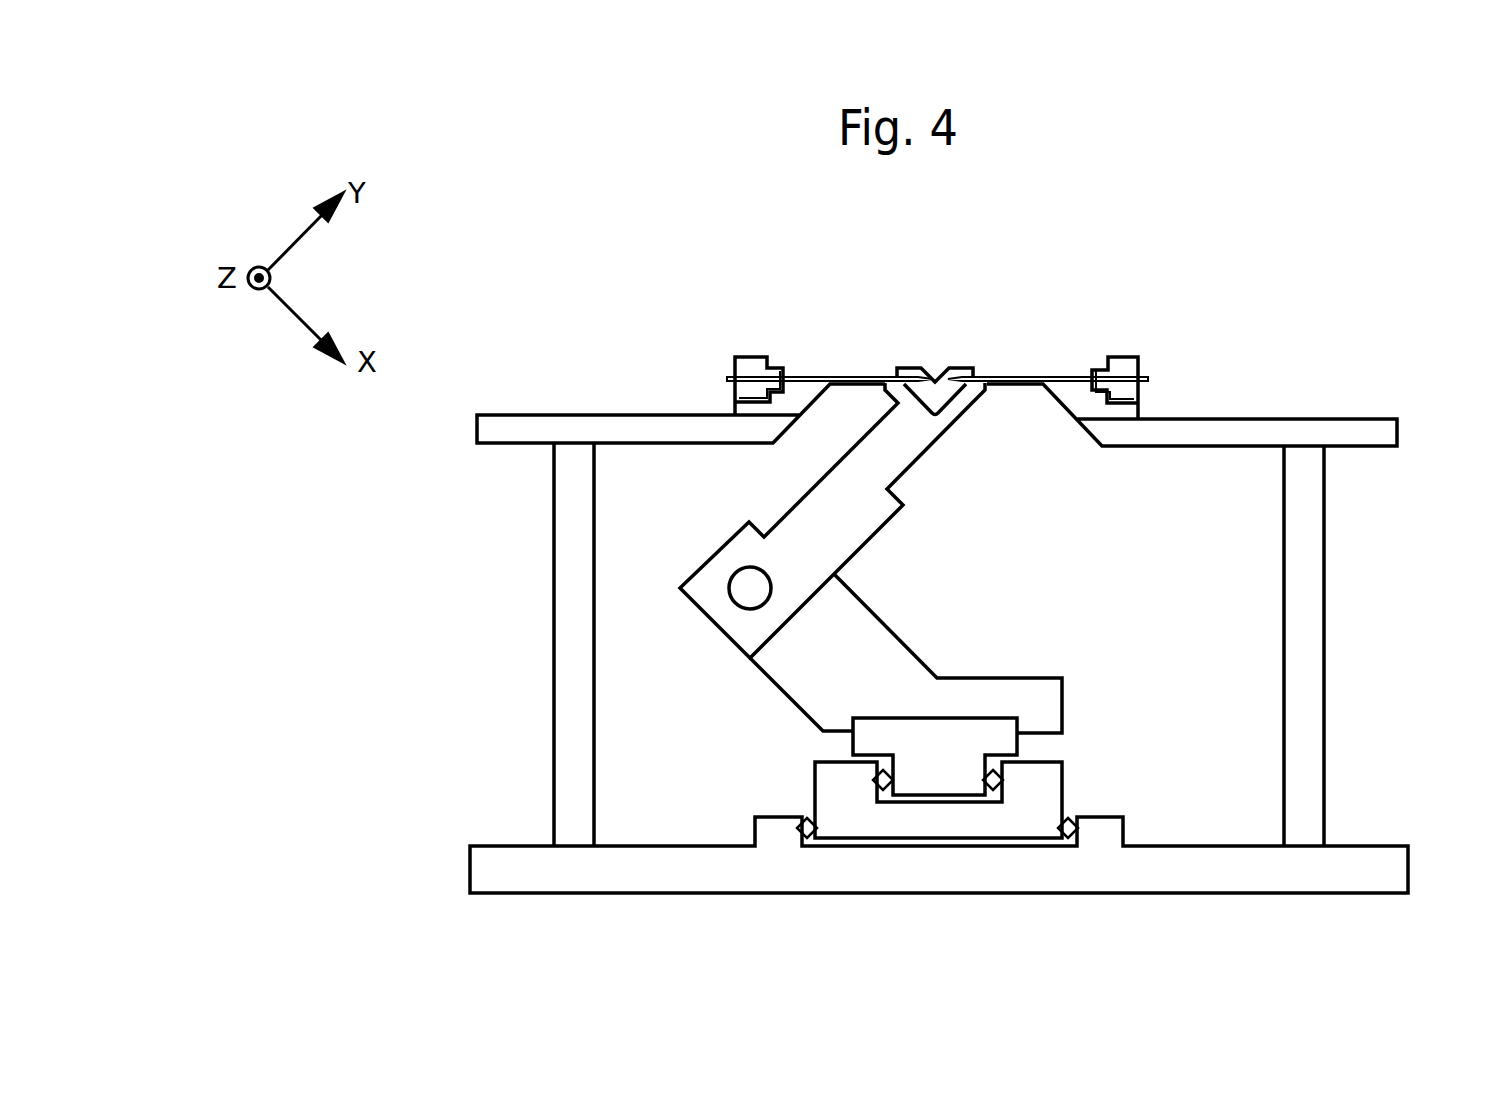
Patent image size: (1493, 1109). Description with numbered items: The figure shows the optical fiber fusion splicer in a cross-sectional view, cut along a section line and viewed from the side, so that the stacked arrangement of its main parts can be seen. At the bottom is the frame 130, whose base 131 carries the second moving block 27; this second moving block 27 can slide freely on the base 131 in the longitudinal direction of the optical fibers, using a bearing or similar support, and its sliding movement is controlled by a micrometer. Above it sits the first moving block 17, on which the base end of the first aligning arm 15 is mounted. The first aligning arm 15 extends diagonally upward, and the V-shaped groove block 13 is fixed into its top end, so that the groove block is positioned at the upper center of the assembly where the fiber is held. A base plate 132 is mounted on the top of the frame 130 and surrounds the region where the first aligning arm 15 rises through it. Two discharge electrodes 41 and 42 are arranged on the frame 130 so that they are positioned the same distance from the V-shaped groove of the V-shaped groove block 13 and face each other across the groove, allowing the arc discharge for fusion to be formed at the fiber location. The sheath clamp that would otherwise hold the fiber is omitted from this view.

The V-shaped groove block 13 is at (918, 370).
The first aligning arm 15 is at (748, 543).
The first moving block 17 is at (857, 743).
The second moving block 27 is at (1052, 780).
The discharge electrode 41 is at (850, 373).
The discharge electrode 42 is at (1015, 378).
The frame 130 is at (562, 677).
The base 131 is at (1110, 882).
The base plate 132 is at (1213, 428).